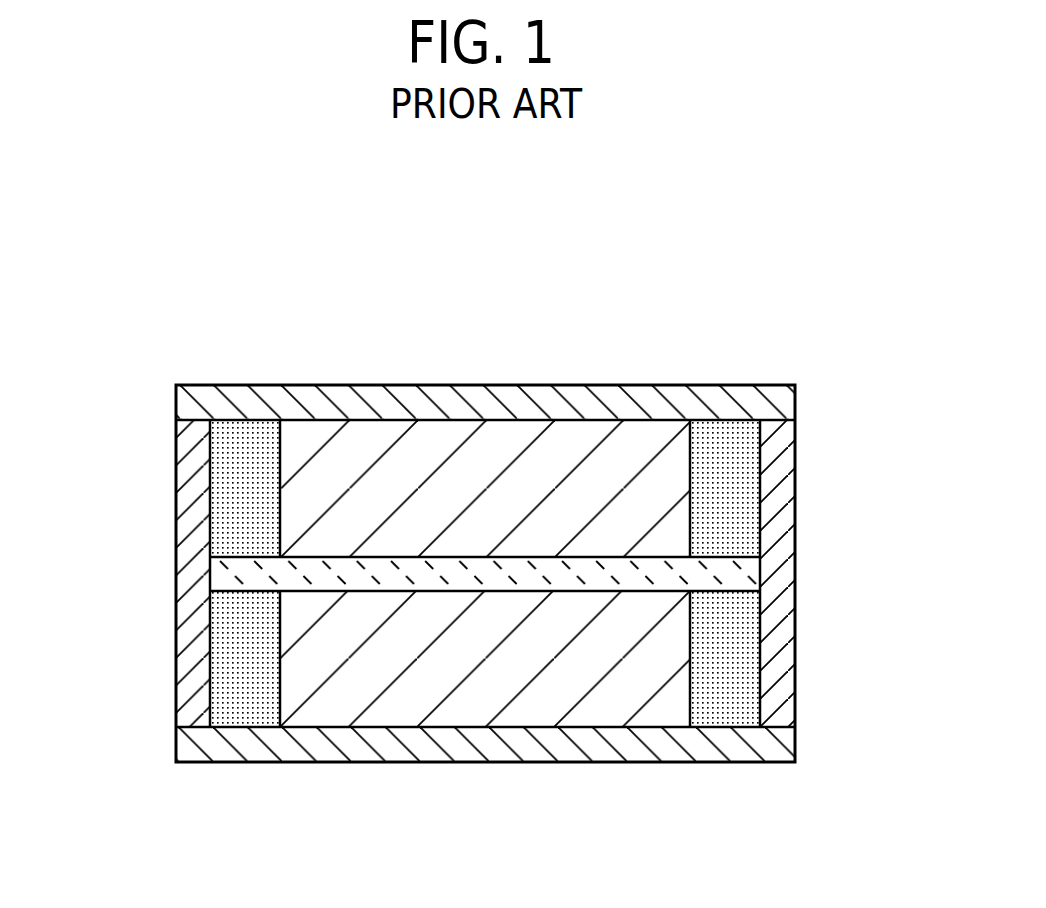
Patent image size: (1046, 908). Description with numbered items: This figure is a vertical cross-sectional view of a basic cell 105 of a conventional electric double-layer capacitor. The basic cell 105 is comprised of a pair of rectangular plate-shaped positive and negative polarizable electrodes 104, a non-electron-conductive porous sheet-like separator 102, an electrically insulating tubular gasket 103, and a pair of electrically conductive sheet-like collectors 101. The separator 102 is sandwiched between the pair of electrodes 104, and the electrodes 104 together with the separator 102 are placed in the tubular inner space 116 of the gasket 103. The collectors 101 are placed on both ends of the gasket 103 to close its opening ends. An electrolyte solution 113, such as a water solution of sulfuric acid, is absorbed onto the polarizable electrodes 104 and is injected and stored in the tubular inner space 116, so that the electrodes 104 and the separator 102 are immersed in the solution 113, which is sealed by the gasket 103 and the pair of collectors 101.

The basic cell 105 is at (177, 352).
The collector 101 is at (588, 400).
The separator 102 is at (247, 573).
The gasket 103 is at (192, 693).
The polarizable electrode 104 is at (398, 470).
The electrolyte solution 113 is at (245, 471).
The tubular inner space 116 is at (262, 452).